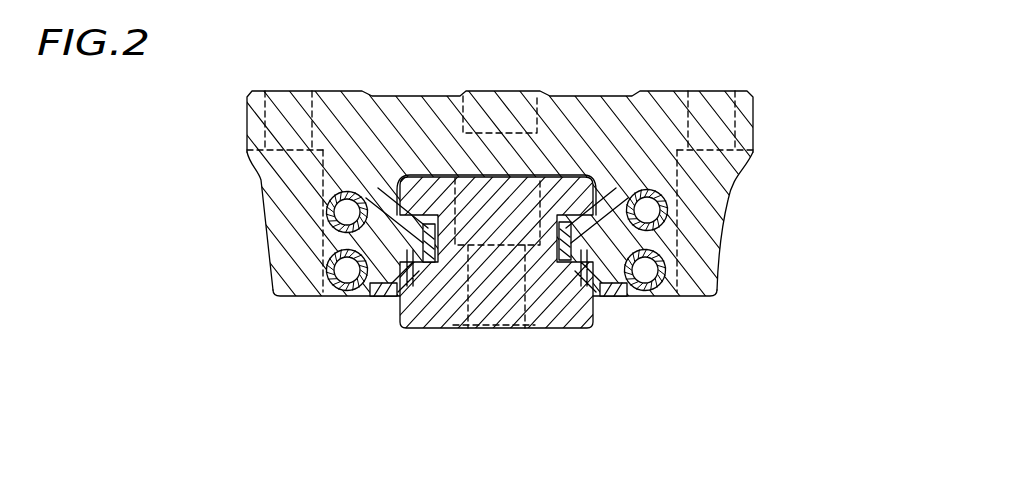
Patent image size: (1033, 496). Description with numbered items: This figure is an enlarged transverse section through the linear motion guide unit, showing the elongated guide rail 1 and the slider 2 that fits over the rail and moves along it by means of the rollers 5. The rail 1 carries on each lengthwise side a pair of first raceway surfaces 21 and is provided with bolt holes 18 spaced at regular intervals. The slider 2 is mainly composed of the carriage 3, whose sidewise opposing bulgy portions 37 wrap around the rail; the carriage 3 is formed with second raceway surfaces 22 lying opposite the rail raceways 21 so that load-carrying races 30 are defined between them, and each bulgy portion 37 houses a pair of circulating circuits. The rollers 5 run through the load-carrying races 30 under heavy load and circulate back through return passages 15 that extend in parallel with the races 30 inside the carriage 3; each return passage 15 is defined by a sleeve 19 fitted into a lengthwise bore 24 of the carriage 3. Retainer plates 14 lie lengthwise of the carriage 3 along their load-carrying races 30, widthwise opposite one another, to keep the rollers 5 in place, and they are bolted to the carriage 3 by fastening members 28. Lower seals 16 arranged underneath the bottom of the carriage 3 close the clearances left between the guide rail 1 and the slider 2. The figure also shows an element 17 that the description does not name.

The guide rail 1 is at (509, 330).
The slider 2 is at (693, 84).
The carriage 3 is at (645, 105).
The roller 5 is at (332, 206).
The retainer plate 14 is at (430, 264).
The return passage 15 is at (347, 93).
The lower seal 16 is at (378, 297).
The threaded bore 17 is at (303, 96).
The bolt hole 18 is at (478, 330).
The sleeve 19 is at (335, 222).
The raceway surface 21 is at (412, 188).
The raceway surface 22 is at (395, 195).
The lengthwise bore 24 is at (345, 291).
The fastening member 28 is at (460, 95).
The load-carrying race 30 is at (405, 210).
The bulgy portion 37 is at (281, 252).